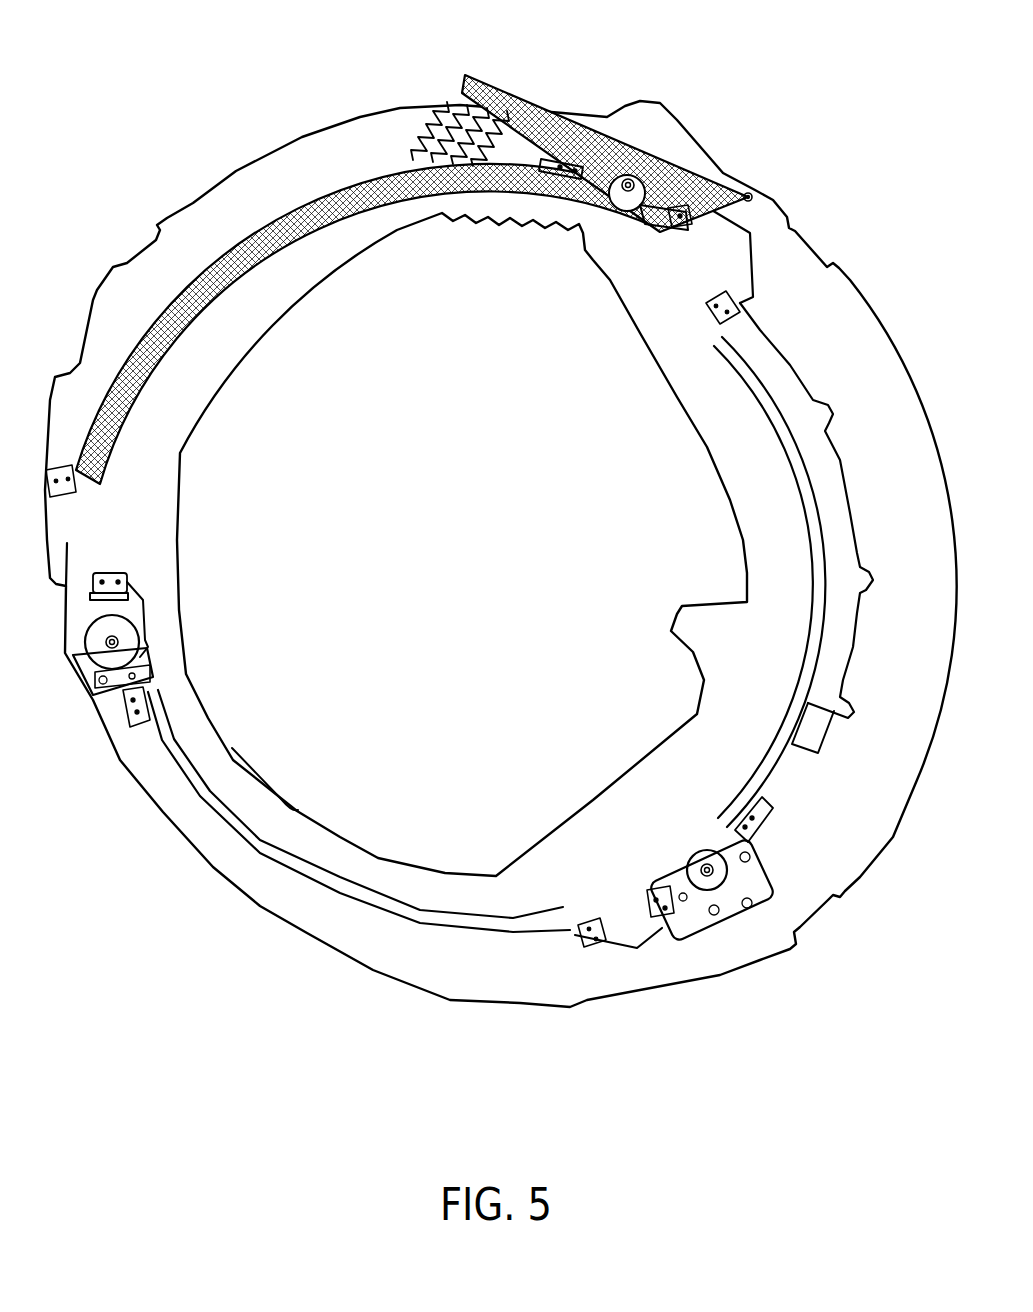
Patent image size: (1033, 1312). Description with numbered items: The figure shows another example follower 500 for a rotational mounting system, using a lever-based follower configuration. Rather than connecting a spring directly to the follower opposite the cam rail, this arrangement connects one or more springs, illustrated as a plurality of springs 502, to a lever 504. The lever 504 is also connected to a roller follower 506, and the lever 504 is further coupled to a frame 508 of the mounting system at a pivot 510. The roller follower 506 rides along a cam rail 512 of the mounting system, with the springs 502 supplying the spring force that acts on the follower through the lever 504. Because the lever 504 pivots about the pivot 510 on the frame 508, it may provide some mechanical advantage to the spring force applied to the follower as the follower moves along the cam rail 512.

The follower 500 is at (802, 37).
The springs 502 is at (437, 103).
The lever 504 is at (507, 90).
The roller follower 506 is at (667, 150).
The frame 508 is at (837, 267).
The pivot 510 is at (750, 187).
The cam rail 512 is at (247, 233).